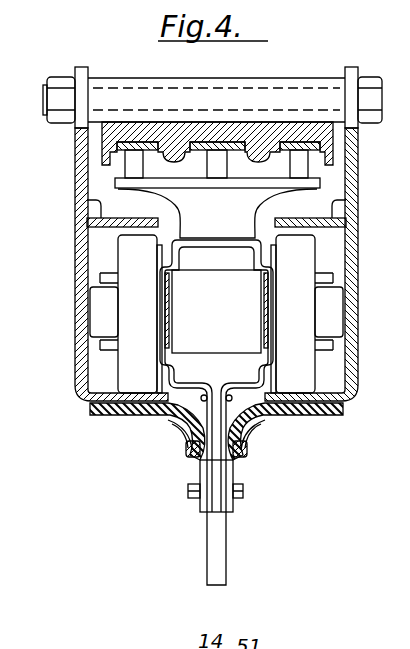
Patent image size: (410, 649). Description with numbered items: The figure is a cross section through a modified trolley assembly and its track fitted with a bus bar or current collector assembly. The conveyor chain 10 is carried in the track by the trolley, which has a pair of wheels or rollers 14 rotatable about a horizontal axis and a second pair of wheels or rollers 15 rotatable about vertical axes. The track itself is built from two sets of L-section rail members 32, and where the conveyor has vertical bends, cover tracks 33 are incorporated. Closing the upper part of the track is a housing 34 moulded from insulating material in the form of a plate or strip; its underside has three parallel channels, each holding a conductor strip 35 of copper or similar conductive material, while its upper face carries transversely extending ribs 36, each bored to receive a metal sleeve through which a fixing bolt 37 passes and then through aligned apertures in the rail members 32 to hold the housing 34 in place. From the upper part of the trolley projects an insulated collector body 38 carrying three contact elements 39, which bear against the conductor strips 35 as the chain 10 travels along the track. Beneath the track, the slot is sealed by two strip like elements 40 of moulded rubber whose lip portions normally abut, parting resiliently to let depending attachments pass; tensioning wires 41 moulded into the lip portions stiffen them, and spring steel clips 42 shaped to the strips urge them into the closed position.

The conveyor chain 10 is at (240, 270).
The wheels or rollers 14 is at (142, 372).
The wheels or rollers 15 is at (93, 313).
The L-section rail members 32 is at (358, 270).
The cover tracks 33 is at (330, 212).
The housing 34 is at (312, 127).
The conductor strips 35 is at (290, 142).
The ribs 36 is at (312, 80).
The fixing bolt 37 is at (272, 82).
The insulated collector body 38 is at (322, 183).
The contact elements 39 is at (218, 168).
The strip like elements 40 is at (176, 418).
The tensioning wires 41 is at (188, 458).
The spring steel clips 42 is at (173, 437).